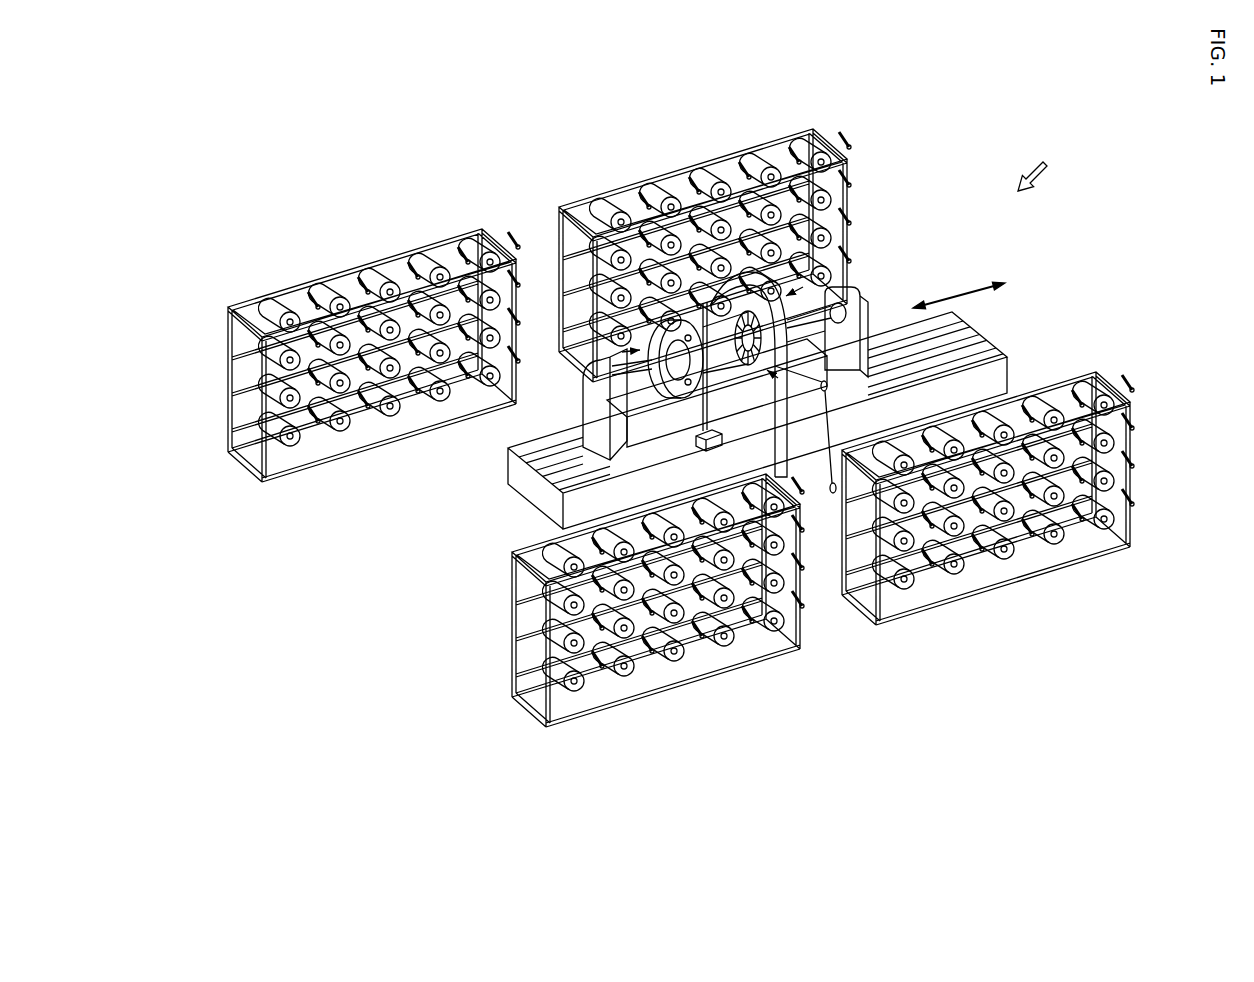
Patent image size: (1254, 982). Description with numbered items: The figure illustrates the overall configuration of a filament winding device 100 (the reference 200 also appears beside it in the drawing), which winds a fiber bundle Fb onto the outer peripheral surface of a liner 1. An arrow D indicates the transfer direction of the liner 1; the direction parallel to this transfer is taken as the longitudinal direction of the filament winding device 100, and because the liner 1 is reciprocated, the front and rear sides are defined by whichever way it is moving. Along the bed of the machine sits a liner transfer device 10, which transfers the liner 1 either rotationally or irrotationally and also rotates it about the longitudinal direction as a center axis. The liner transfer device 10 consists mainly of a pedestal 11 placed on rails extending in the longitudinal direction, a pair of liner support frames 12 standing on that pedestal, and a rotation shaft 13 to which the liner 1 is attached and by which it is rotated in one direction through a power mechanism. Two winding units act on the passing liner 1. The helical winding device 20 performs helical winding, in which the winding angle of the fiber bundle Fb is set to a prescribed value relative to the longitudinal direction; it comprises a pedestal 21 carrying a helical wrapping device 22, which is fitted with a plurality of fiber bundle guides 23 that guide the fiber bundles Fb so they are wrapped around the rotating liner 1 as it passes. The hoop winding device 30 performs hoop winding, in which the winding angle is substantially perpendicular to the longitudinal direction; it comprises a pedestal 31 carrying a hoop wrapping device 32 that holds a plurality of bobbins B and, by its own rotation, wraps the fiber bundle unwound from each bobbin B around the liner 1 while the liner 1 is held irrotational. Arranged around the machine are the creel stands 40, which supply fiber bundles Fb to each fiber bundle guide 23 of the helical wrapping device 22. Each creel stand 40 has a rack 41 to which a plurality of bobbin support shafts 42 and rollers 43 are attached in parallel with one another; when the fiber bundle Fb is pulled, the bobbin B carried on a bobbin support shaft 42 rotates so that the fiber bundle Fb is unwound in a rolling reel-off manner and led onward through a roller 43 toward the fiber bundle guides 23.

The liner 1 is at (745, 362).
The liner transfer device 10 is at (570, 386).
The pedestal 11 is at (742, 413).
The liner support frames 12 is at (847, 283).
The rotation shaft 13 is at (869, 327).
The helical winding device 20 is at (846, 240).
The pedestal 21 is at (770, 449).
The helical wrapping device 22 is at (765, 372).
The fiber bundle guides 23 is at (772, 374).
The hoop winding device 30 is at (565, 368).
The pedestal 31 is at (712, 441).
The hoop wrapping device 32 is at (697, 393).
The creel stands 40 is at (313, 197).
The rack 41 is at (228, 336).
The bobbin support shafts 42 is at (304, 279).
The rollers 43 is at (431, 246).
The filament winding device 100 is at (1070, 167).
The manufacturing apparatus (second embodiment) 200 is at (1070, 167).
The bobbin B is at (368, 270).
The arrow D is at (959, 287).
The fiber bundle Fb is at (835, 438).